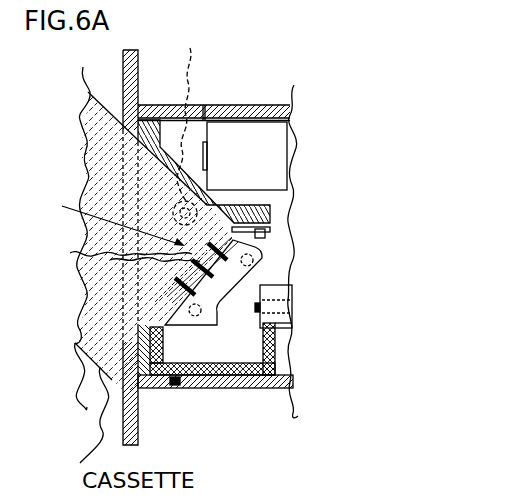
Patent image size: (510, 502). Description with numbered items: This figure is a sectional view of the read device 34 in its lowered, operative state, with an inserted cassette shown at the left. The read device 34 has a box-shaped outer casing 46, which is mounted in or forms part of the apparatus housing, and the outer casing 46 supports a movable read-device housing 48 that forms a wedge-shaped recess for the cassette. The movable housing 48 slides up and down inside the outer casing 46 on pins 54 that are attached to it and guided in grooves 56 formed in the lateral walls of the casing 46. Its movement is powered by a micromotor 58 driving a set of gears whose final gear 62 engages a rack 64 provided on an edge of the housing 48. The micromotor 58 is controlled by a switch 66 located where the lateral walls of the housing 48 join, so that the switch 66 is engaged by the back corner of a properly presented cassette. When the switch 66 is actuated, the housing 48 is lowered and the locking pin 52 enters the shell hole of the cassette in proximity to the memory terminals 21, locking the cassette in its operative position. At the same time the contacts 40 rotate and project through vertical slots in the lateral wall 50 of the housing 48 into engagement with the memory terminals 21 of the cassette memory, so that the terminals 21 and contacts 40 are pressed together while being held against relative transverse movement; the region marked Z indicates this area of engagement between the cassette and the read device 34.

The memory terminals 21 is at (74, 253).
The read device 34 is at (258, 104).
The contacts 40 is at (145, 310).
The outer casing 46 is at (139, 80).
The movable read-device housing 48 is at (205, 106).
The lateral wall 50 is at (216, 320).
The locking pin 52 is at (192, 125).
The pins 54 is at (177, 388).
The grooves 56 is at (194, 389).
The micromotor 58 is at (291, 143).
The final gear 62 is at (272, 288).
The rack 64 is at (275, 340).
The switch 66 is at (272, 232).
The sensing position Z is at (115, 218).